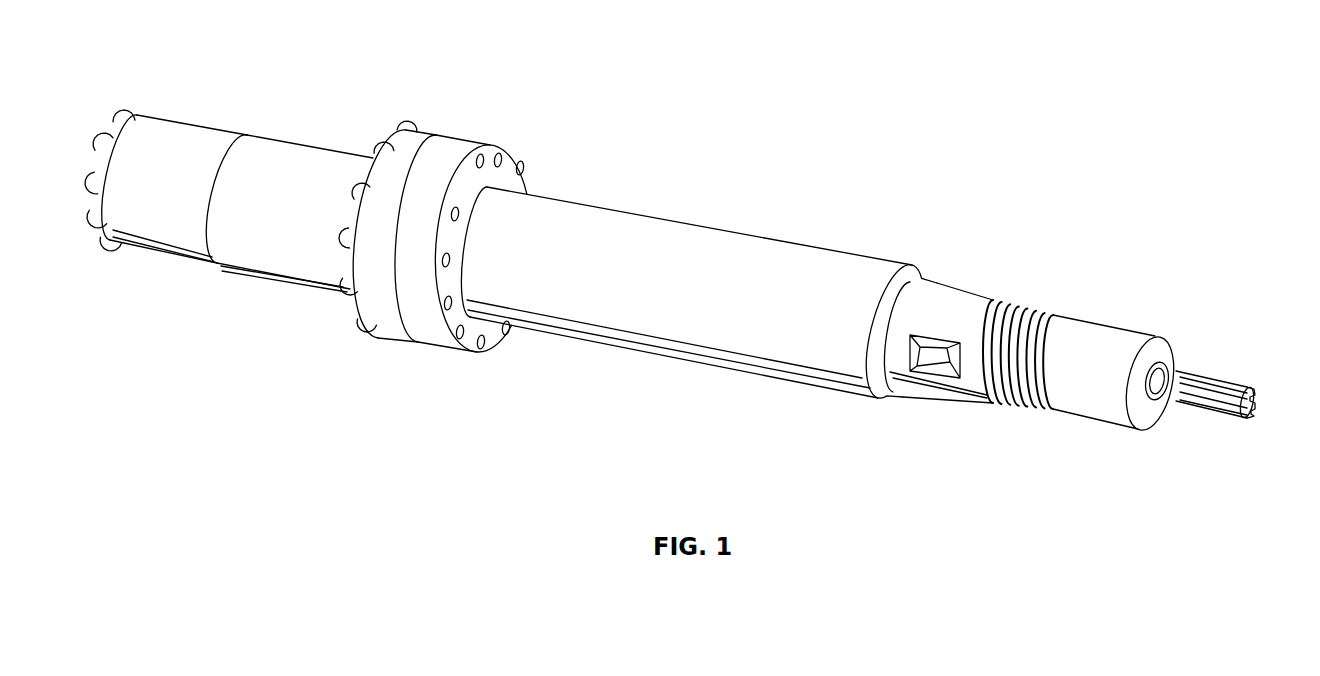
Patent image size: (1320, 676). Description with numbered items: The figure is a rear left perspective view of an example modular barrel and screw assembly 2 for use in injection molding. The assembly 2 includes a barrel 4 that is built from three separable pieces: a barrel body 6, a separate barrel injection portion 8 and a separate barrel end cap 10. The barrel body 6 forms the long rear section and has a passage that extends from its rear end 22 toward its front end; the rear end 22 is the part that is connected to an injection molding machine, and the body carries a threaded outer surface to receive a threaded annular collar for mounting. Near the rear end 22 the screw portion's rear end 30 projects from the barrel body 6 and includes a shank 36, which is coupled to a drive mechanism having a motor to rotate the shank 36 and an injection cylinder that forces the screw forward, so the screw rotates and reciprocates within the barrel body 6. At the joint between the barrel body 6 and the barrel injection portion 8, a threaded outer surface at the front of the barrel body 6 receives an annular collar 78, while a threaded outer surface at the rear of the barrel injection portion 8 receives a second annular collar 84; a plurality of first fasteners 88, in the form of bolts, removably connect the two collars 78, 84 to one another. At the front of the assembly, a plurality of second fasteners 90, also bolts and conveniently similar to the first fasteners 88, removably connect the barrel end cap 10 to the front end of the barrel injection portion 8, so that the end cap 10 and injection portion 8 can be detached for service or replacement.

The modular barrel and screw assembly 2 is at (870, 190).
The barrel 4 is at (617, 210).
The barrel body 6 is at (742, 257).
The barrel injection portion 8 is at (285, 163).
The barrel end cap 10 is at (187, 143).
The rear end 22 is at (1148, 415).
The rear end 30 is at (1252, 399).
The shank 36 is at (1217, 410).
The annular collar 78 is at (469, 153).
The annular collar 84 is at (418, 150).
The first fasteners 88 is at (383, 149).
The second fasteners 90 is at (121, 121).